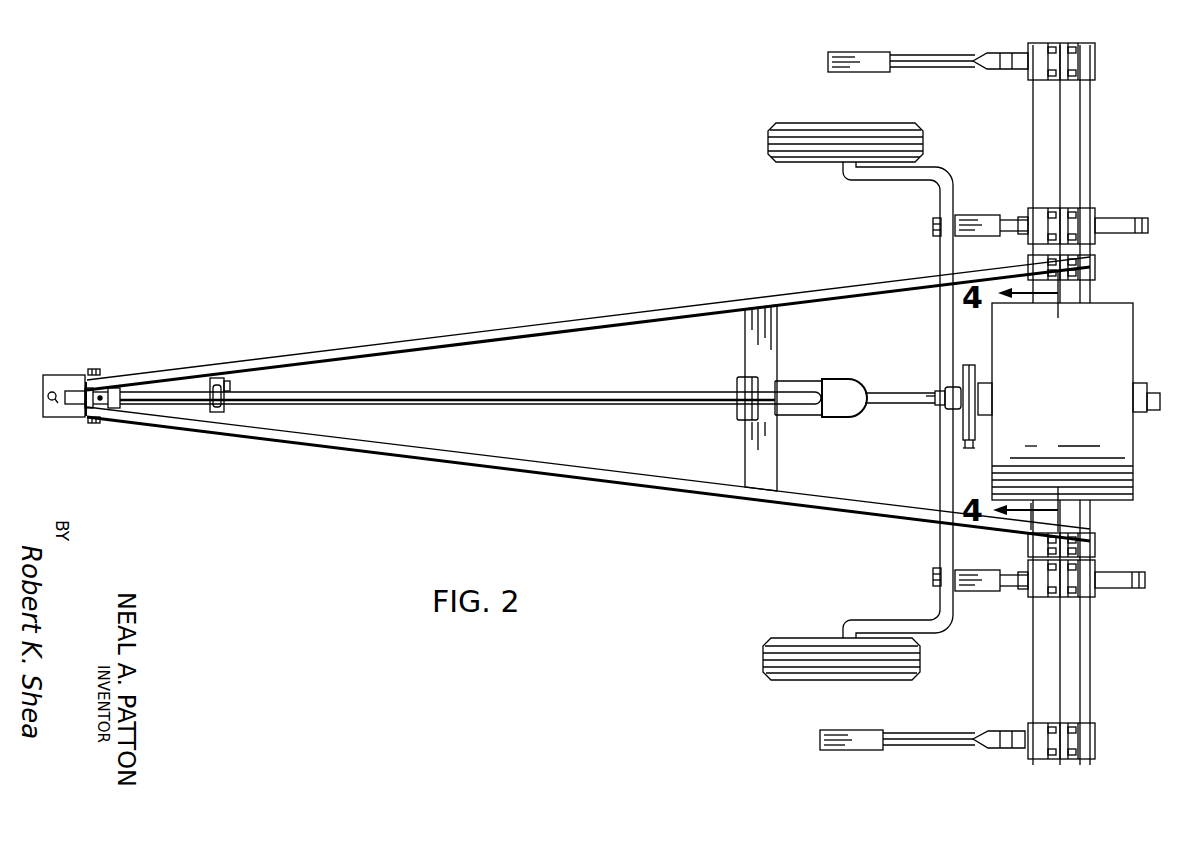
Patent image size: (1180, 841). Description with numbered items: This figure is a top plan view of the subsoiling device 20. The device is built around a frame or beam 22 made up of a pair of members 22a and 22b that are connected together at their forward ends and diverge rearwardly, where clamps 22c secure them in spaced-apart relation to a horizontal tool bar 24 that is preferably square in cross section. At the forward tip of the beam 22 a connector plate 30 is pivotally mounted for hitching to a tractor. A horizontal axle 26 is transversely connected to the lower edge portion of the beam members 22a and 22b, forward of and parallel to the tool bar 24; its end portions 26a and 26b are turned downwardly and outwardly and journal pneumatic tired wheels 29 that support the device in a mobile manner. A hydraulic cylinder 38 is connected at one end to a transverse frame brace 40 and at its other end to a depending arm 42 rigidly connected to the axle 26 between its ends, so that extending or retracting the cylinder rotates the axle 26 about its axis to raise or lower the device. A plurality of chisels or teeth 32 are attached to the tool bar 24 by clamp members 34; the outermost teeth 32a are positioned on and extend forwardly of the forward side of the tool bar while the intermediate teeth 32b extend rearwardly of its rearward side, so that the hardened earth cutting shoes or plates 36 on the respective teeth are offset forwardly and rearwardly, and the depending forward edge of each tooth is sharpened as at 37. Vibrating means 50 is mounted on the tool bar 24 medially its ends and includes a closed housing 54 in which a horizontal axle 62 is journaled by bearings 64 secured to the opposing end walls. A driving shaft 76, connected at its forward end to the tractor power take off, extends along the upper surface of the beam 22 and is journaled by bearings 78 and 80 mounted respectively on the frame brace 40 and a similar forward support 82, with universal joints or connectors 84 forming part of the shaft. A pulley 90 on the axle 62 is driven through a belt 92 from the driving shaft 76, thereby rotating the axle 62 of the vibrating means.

The device 20 is at (611, 213).
The frame or beam 22 is at (614, 407).
The beam member 22a is at (505, 329).
The beam member 22b is at (485, 456).
The clamps 22c is at (1096, 265).
The tool bar 24 is at (1093, 663).
The axle 26 is at (898, 400).
The axle end portion 26a is at (873, 182).
The axle end portion 26b is at (870, 623).
The pneumatic tired wheels 29 is at (899, 124).
The connector plate 30 is at (50, 377).
The chisels or teeth 32 is at (981, 397).
The outermost teeth 32a is at (915, 68).
The intermediate teeth 32b is at (1112, 220).
The clamp members 34 is at (1096, 70).
The shoe or plate 36 is at (870, 52).
The sharpened edge 37 is at (978, 58).
The hydraulic cylinder 38 is at (830, 383).
The transverse frame brace 40 is at (778, 462).
The depending arm 42 is at (930, 392).
The vibrating means 50 is at (1069, 387).
The housing 54 is at (1137, 318).
The axle 62 is at (1152, 399).
The bearings 64 is at (990, 385).
The driving shaft 76 is at (368, 393).
The bearing 78 is at (745, 382).
The bearing 80 is at (212, 378).
The forward support 82 is at (230, 386).
The universal joints or connectors 84 is at (114, 388).
The pulley 90 is at (978, 368).
The belt 92 is at (970, 446).